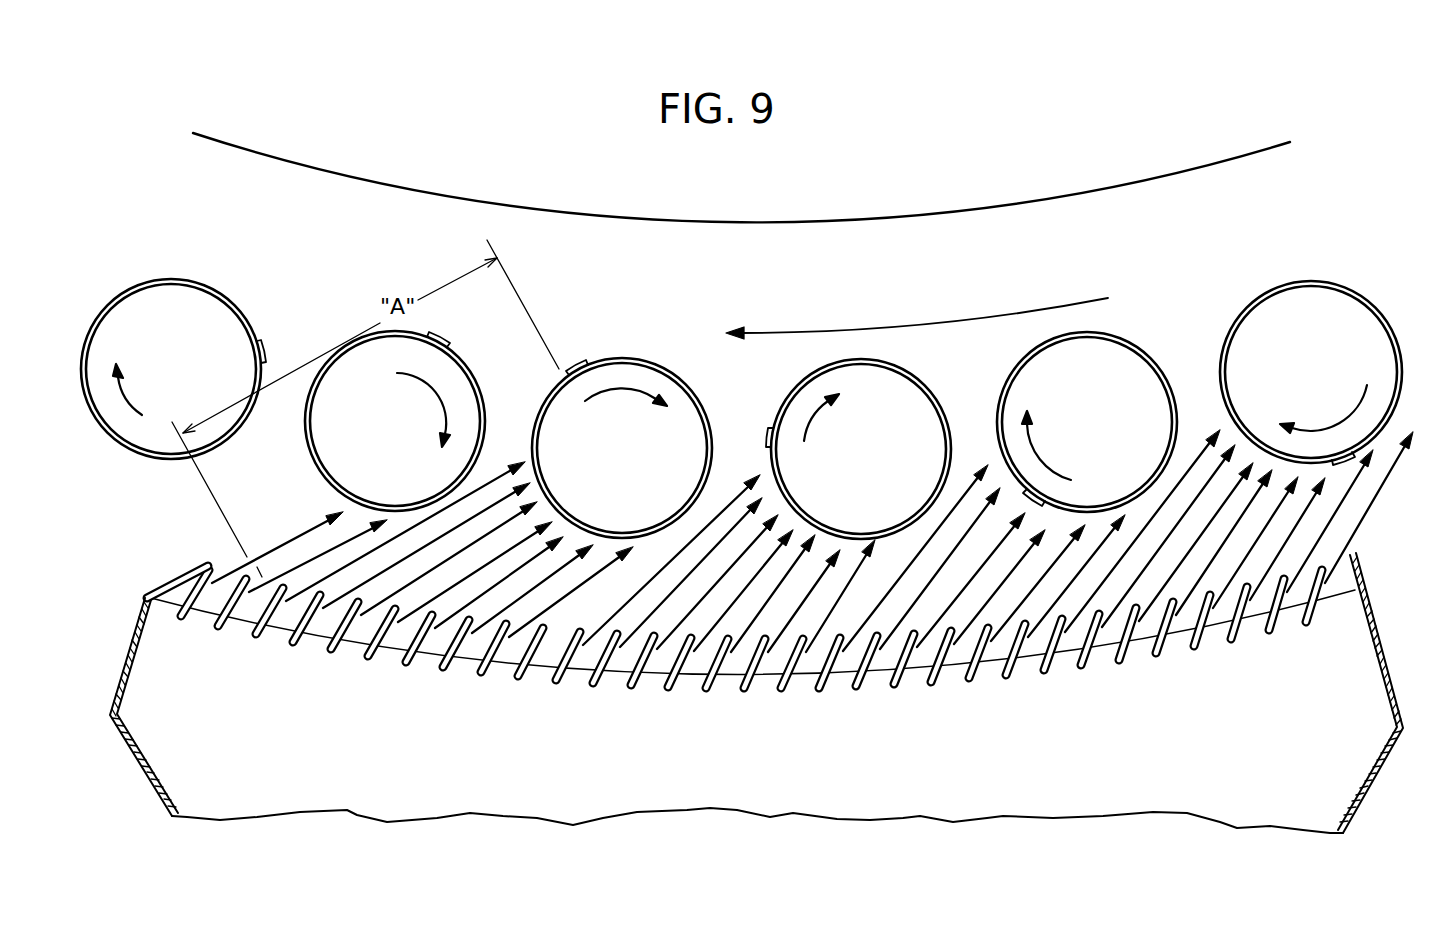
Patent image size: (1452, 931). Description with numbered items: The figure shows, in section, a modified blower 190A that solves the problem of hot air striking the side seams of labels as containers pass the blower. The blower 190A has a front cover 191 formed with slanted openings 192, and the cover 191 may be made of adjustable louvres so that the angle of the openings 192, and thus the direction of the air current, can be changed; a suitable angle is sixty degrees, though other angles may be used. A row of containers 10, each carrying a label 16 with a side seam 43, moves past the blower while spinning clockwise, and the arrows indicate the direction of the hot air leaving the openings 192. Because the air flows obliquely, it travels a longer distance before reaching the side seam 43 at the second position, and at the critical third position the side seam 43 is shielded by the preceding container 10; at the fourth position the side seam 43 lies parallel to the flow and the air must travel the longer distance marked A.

The container 10 is at (140, 318).
The label 16 is at (190, 280).
The side seam 43 is at (268, 346).
The modified blower 190A is at (145, 773).
The front cover 191 is at (780, 569).
The slanted openings 192 is at (230, 627).